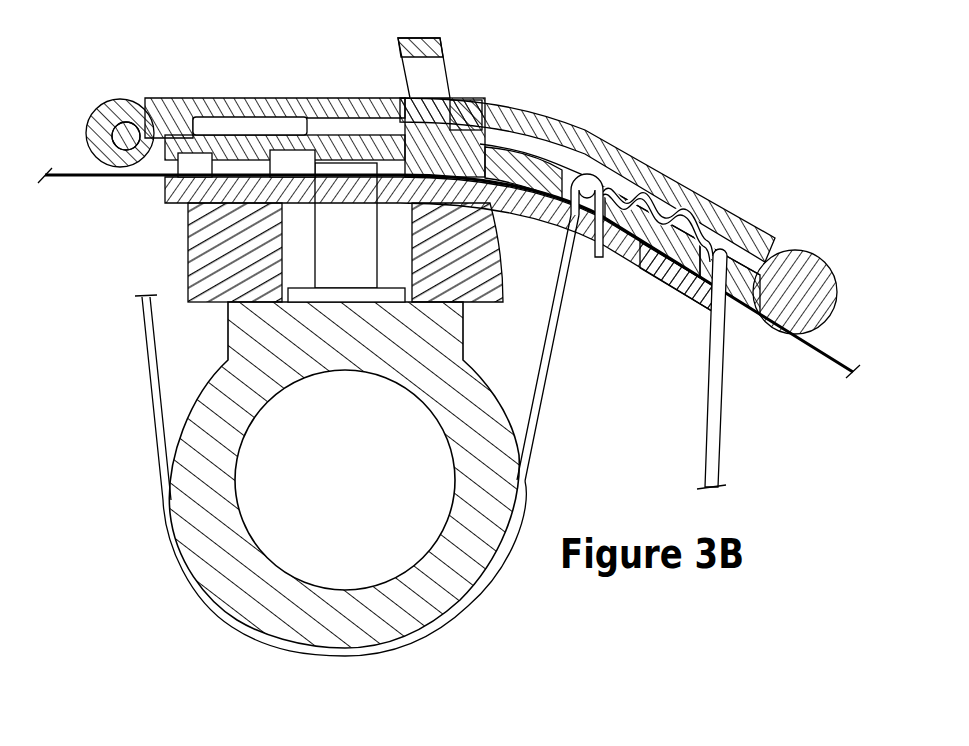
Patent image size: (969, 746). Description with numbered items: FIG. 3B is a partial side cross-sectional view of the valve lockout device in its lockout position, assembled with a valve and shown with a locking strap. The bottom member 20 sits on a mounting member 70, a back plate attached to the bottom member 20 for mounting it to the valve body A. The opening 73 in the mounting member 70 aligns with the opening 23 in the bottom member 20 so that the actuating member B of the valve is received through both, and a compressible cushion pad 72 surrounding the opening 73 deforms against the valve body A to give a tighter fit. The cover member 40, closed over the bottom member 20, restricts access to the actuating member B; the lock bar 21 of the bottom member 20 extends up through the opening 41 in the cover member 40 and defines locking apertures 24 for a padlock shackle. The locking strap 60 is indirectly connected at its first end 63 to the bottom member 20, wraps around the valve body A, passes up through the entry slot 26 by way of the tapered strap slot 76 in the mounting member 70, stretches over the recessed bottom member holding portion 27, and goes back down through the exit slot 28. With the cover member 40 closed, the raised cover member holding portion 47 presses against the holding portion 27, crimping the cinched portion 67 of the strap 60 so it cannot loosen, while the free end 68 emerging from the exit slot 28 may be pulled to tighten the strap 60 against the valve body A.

The bottom member 20 is at (817, 300).
The lock bar 21 is at (438, 40).
The opening 23 is at (352, 147).
The locking apertures 24 is at (437, 100).
The entry strap slot 26 is at (560, 122).
The bottom member holding portion 27 is at (640, 192).
The exit strap slot 28 is at (718, 295).
The cover member 40 is at (700, 207).
The opening 41 is at (417, 97).
The cover member holding portion 47 is at (680, 212).
The locking strap 60 is at (537, 387).
The first end 63 is at (155, 377).
The cinched portion 67 is at (662, 260).
The free end 68 is at (720, 440).
The mounting member 70 is at (490, 160).
The cushion pad 72 is at (212, 247).
The opening 73 is at (330, 165).
The strap slot 76 is at (580, 255).
The valve body A is at (197, 478).
The actuating member B is at (330, 172).